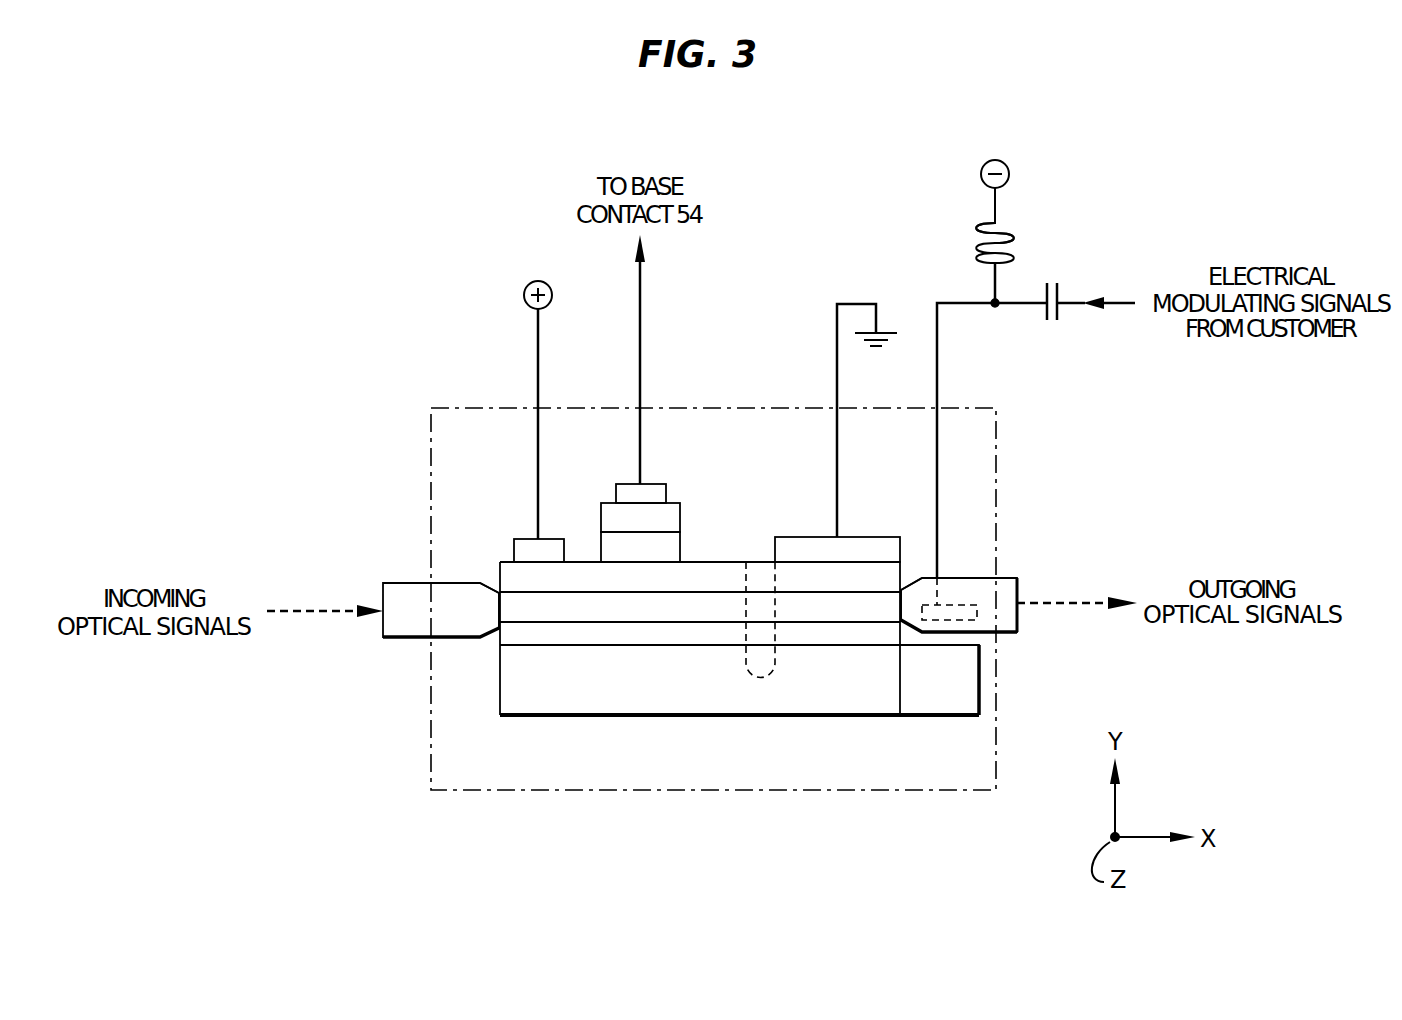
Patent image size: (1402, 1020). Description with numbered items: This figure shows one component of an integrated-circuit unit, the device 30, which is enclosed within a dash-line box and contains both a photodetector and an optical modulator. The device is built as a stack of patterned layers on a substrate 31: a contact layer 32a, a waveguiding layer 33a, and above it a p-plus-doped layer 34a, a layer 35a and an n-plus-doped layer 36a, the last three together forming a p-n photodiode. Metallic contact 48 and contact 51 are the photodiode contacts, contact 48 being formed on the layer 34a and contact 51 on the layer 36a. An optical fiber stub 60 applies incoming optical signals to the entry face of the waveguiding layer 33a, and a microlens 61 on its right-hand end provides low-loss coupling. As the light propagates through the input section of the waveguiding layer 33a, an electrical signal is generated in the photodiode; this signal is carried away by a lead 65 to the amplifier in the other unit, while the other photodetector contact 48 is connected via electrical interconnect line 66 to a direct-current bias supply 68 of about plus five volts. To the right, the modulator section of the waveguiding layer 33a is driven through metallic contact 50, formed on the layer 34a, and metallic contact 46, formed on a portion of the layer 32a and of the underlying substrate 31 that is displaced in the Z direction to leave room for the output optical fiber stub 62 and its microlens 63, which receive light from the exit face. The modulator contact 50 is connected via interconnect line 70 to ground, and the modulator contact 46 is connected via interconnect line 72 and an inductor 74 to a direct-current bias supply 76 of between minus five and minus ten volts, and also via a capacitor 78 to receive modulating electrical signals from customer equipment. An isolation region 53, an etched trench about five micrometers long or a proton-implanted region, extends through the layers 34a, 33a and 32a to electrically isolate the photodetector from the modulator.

The device 30 is at (430, 448).
The substrate 31 is at (660, 707).
The layer 32a is at (521, 635).
The waveguiding layer 33a is at (580, 613).
The layer 34a is at (510, 578).
The layer 35a is at (670, 551).
The layer 36a is at (677, 510).
The metallic contact 46 is at (948, 608).
The metallic contact 48 is at (527, 543).
The metallic contact 50 is at (865, 543).
The contact 51 is at (656, 490).
The isolation region 53 is at (767, 655).
The optical fiber stub 60 is at (403, 630).
The microlens 61 is at (484, 610).
The optical fiber stub 62 is at (965, 577).
The microlens 63 is at (910, 607).
The lead 65 is at (642, 352).
The electrical interconnect line 66 is at (540, 345).
The direct-current bias supply 68 is at (530, 283).
The interconnect line 70 is at (835, 330).
The interconnect line 72 is at (958, 303).
The inductor 74 is at (1010, 233).
The direct-current bias supply 76 is at (992, 157).
The capacitor 78 is at (1053, 323).